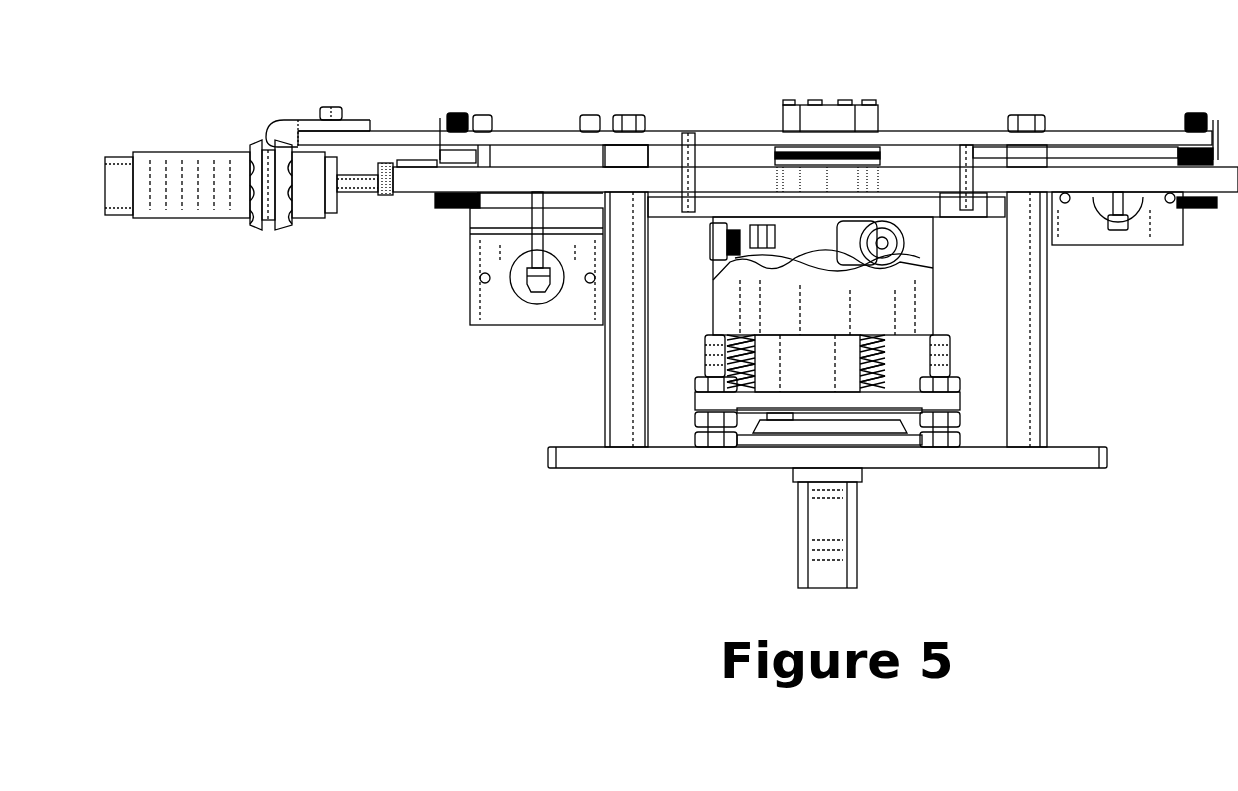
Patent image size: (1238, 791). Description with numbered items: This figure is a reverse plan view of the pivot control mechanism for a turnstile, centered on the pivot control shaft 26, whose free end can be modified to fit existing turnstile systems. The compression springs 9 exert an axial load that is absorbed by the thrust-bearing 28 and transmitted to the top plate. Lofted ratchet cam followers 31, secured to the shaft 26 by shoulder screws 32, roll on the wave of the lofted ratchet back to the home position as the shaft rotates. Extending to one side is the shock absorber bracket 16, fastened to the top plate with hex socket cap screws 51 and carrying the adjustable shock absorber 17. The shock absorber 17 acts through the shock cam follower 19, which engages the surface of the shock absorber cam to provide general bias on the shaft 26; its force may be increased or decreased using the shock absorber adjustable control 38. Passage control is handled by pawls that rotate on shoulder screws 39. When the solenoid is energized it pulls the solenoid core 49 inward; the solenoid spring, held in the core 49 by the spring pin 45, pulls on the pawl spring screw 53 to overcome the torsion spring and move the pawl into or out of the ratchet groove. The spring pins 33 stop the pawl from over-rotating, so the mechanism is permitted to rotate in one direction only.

The shock absorber bracket 16 is at (283, 120).
The hex socket cap screws 51 is at (328, 107).
The shoulder screws 39 is at (458, 113).
The spring pins 33 is at (696, 156).
The thrust-bearing 28 is at (856, 152).
The shock absorber adjustable control 38 is at (121, 203).
The adjustable shock absorber 17 is at (188, 206).
The shock cam follower 19 is at (255, 232).
The spring pin 45 is at (512, 273).
The solenoid core 49 is at (535, 293).
The shoulder screws 32 is at (710, 250).
The lofted ratchet cam followers 31 is at (722, 263).
The compression springs 9 is at (710, 358).
The pawl spring screw 53 is at (1118, 232).
The pivot control shaft 26 is at (840, 531).